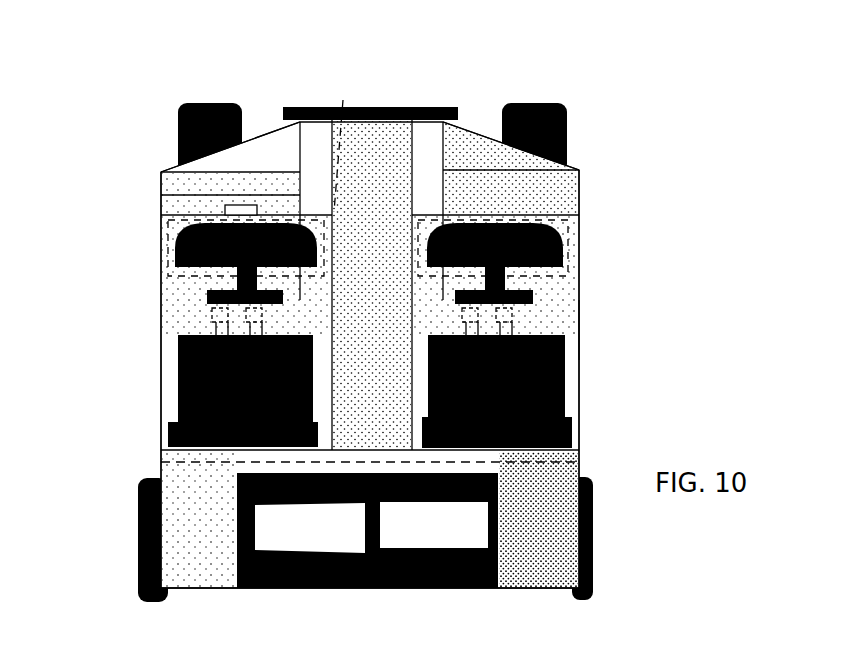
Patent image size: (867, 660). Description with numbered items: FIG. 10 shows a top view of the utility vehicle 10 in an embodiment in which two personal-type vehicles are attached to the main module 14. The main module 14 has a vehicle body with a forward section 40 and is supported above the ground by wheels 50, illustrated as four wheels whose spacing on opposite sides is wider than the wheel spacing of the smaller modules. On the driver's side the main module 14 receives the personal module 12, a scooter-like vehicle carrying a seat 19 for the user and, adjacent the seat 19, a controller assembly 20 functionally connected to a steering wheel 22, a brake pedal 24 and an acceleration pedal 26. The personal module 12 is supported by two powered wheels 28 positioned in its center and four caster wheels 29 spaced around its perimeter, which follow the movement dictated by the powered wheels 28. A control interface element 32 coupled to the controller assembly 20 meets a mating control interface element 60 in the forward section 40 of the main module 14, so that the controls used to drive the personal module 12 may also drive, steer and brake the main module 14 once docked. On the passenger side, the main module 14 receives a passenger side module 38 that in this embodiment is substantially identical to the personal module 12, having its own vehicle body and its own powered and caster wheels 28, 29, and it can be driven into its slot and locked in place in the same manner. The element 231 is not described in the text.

The utility vehicle 10 is at (124, 44).
The personal module 12 is at (150, 306).
The main module 14 is at (476, 120).
The seat 19 is at (178, 400).
The controller assembly 20 is at (178, 224).
The steering wheel 22 is at (237, 297).
The brake pedal 24 is at (172, 237).
The acceleration pedal 26 is at (312, 282).
The powered wheels 28 is at (205, 322).
The caster wheels 29 is at (582, 462).
The control interface element 32 is at (218, 221).
The passenger side module 38 is at (595, 330).
The forward section 40 is at (247, 206).
The wheels 50 is at (567, 112).
The control interface element 60 is at (243, 205).
The control box 231 is at (402, 593).